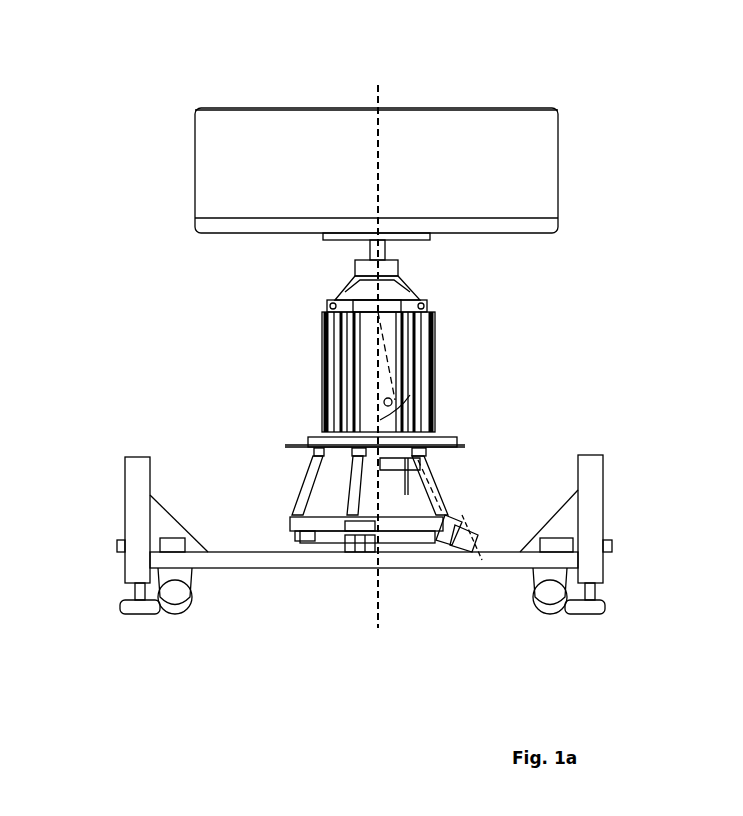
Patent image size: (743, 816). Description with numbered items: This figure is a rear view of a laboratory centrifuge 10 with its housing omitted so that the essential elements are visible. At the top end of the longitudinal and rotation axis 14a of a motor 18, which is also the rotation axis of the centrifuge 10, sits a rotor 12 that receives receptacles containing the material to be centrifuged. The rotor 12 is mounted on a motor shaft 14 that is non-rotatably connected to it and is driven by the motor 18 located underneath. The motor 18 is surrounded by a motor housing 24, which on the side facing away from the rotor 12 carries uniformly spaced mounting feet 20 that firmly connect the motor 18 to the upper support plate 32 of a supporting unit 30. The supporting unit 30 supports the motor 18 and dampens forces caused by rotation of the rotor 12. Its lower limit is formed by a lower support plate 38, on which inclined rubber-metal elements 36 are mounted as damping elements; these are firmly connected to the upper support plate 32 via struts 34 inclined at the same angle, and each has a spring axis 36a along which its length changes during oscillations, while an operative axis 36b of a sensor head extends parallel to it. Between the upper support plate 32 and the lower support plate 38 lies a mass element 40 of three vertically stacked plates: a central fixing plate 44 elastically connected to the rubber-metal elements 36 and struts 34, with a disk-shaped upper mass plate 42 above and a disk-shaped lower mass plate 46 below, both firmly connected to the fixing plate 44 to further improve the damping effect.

The laboratory centrifuge 10 is at (156, 39).
The rotor 12 is at (328, 172).
The motor shaft 14 is at (370, 258).
The longitudinal and rotation axis 14a is at (375, 92).
The motor 18 is at (302, 360).
The mounting feet 20 is at (318, 437).
The motor housing 24 is at (435, 322).
The supporting unit 30 is at (268, 482).
The upper support plate 32 is at (290, 445).
The struts 34 is at (308, 475).
The rubber-metal elements 36 is at (285, 548).
The spring axis 36a is at (465, 575).
The operative axis 36b is at (478, 565).
The lower support plate 38 is at (407, 560).
The mass element 40 is at (292, 560).
The upper mass plate 42 is at (334, 560).
The fixing plate 44 is at (322, 560).
The lower mass plate 46 is at (310, 560).